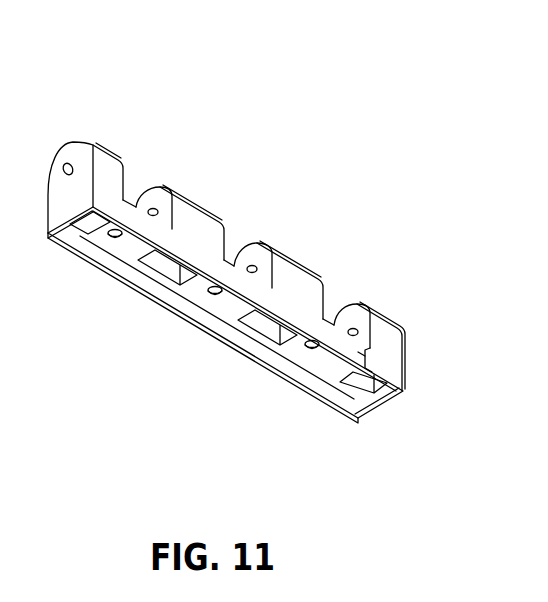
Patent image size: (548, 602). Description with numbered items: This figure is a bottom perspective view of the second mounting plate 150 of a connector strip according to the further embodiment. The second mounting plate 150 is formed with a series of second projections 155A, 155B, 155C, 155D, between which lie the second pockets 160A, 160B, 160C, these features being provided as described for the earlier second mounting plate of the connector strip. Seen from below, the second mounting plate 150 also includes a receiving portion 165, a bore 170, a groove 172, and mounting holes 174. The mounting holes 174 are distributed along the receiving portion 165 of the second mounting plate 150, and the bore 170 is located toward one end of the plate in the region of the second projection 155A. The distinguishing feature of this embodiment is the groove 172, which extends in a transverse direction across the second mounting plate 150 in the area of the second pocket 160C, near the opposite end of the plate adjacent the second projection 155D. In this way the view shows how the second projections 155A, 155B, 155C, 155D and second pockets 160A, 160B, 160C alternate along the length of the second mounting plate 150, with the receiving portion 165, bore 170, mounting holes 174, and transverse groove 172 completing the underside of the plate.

The second mounting plate 150 is at (225, 260).
The second projection 155A is at (75, 161).
The second projection 155B is at (184, 194).
The second projection 155C is at (293, 298).
The second projection 155D is at (386, 321).
The second pocket 160A is at (134, 205).
The second pocket 160B is at (234, 262).
The second pocket 160C is at (335, 322).
The receiving portion 165 is at (88, 246).
The bore 170 is at (66, 172).
The groove 172 is at (358, 352).
The mounting holes 174 is at (108, 238).